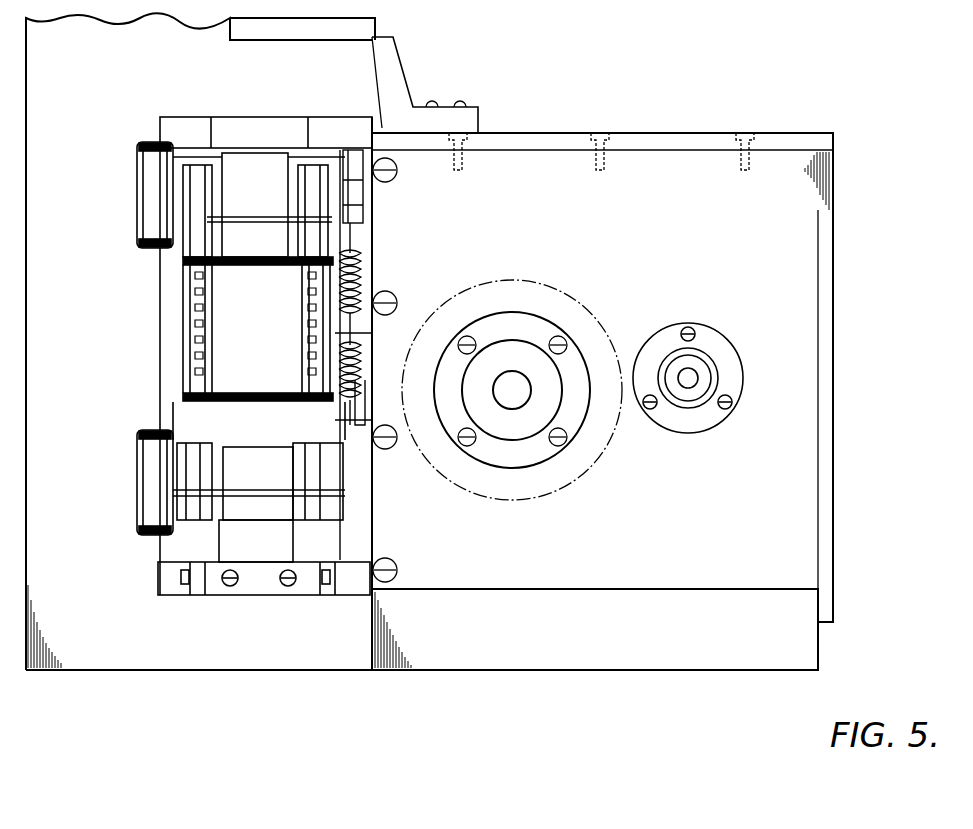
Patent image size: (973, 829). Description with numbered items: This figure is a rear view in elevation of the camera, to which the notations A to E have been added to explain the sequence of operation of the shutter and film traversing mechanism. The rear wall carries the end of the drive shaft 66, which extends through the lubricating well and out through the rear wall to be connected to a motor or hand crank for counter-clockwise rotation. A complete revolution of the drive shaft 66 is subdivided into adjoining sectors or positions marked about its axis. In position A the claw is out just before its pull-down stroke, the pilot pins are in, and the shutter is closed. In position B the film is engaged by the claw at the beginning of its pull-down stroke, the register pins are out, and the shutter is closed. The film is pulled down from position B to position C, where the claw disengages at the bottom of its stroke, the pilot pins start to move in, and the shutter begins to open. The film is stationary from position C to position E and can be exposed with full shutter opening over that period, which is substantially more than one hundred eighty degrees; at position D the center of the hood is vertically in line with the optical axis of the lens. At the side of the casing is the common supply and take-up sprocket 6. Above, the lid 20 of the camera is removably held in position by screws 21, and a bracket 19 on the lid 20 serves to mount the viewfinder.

The common supply and take-up sprocket 6 is at (193, 322).
The bracket 19 is at (383, 58).
The lid 20 is at (527, 140).
The screw 21 is at (600, 135).
The drive shaft 66 is at (504, 375).
The position A is at (512, 390).
The position B is at (512, 390).
The position C is at (512, 390).
The position D is at (512, 390).
The position E is at (512, 390).